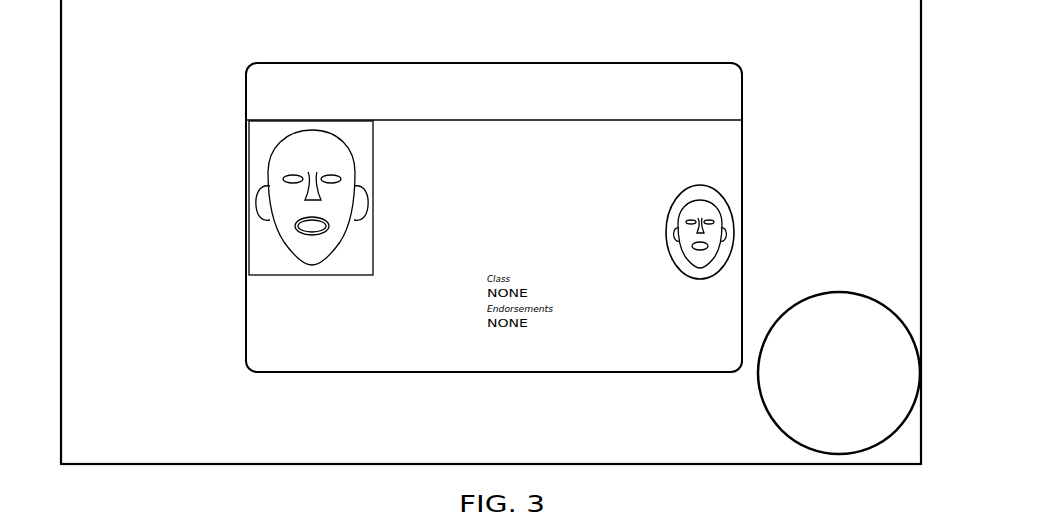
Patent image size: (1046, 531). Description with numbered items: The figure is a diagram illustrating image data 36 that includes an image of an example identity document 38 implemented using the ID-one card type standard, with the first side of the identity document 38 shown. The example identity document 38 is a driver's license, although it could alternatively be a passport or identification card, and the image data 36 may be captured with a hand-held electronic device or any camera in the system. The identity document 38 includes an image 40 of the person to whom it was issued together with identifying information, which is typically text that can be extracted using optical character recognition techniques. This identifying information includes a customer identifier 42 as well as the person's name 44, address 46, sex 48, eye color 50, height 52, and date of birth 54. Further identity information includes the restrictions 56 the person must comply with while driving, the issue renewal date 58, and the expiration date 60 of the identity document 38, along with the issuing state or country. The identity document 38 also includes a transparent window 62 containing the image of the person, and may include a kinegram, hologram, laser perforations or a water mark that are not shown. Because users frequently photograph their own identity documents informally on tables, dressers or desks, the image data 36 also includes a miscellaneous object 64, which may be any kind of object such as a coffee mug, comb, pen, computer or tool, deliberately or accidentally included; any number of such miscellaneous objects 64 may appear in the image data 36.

The image data 36 is at (52, 54).
The identity document 38 is at (247, 78).
The image of the person 40 is at (273, 237).
The customer identifier 42 is at (490, 132).
The name 44 is at (488, 177).
The address 46 is at (437, 221).
The sex 48 is at (410, 279).
The eye color 50 is at (410, 309).
The height 52 is at (383, 341).
The date of birth 54 is at (617, 268).
The restrictions 56 is at (513, 349).
The issue renewal date 58 is at (637, 307).
The expiration date 60 is at (620, 340).
The transparent window 62 is at (680, 192).
The miscellaneous object 64 is at (839, 291).